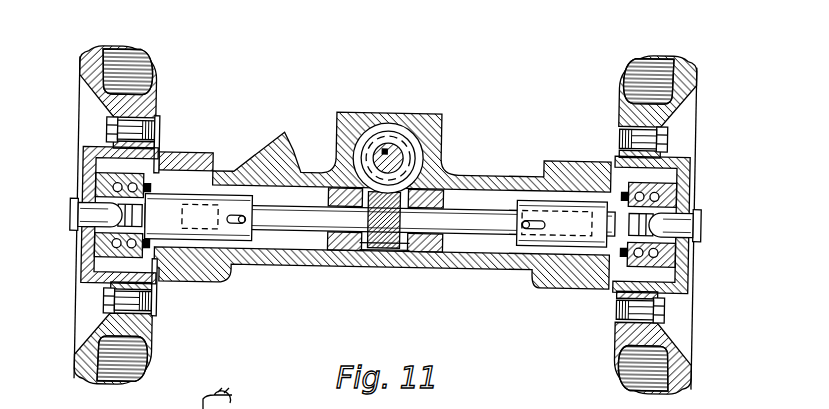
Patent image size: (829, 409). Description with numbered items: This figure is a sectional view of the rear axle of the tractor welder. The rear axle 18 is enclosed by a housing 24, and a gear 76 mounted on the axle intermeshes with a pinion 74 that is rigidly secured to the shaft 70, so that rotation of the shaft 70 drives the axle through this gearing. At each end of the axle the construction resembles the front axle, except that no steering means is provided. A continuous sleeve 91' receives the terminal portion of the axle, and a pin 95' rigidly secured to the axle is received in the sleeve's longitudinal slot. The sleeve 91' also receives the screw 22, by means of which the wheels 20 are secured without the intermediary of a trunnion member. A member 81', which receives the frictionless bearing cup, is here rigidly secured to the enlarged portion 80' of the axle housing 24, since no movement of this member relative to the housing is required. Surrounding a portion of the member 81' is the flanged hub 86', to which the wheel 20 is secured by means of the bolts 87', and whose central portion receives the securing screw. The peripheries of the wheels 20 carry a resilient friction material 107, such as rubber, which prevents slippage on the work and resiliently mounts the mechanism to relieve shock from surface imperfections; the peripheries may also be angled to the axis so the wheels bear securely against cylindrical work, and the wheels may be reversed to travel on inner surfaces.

The resilient friction material 107 is at (123, 58).
The bolts 87' is at (387, 210).
The member 81' is at (367, 213).
The enlarged portion of the axle housing 80' is at (186, 144).
The sleeve 91' is at (377, 184).
The flanged hub 86' is at (382, 215).
The bolts 22 is at (72, 218).
The wheels 20 is at (73, 362).
The pin 95' is at (384, 269).
The shaft 70 is at (394, 150).
The pinion 74 is at (370, 143).
The housing 24 is at (282, 160).
The rear axle 18 is at (472, 212).
The gear 76 is at (382, 252).